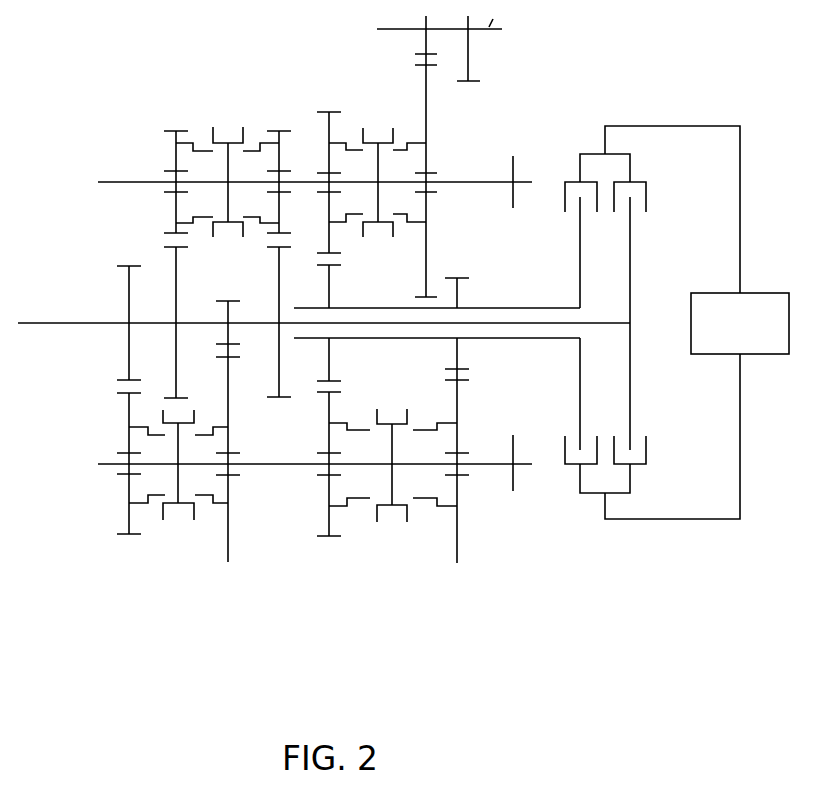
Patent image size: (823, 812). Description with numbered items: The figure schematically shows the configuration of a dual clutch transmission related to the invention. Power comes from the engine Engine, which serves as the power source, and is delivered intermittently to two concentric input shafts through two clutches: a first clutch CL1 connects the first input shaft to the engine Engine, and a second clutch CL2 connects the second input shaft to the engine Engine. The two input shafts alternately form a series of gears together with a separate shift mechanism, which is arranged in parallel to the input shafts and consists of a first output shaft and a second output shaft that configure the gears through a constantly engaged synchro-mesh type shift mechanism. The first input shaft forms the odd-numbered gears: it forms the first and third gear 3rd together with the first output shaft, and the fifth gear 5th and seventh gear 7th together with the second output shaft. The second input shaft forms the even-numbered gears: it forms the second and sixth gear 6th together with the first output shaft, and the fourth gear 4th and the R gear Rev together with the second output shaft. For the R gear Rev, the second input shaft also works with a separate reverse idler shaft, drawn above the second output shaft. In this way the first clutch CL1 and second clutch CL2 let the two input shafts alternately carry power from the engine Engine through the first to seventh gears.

The seventh gear 7th is at (175, 166).
The fifth gear 5th is at (280, 166).
The fourth gear 4th is at (327, 168).
The R gear Rev is at (439, 156).
The third gear 3rd is at (128, 479).
The sixth gear 6th is at (329, 479).
The first clutch CL1 is at (642, 181).
The second clutch CL2 is at (572, 181).
The engine Engine is at (697, 322).